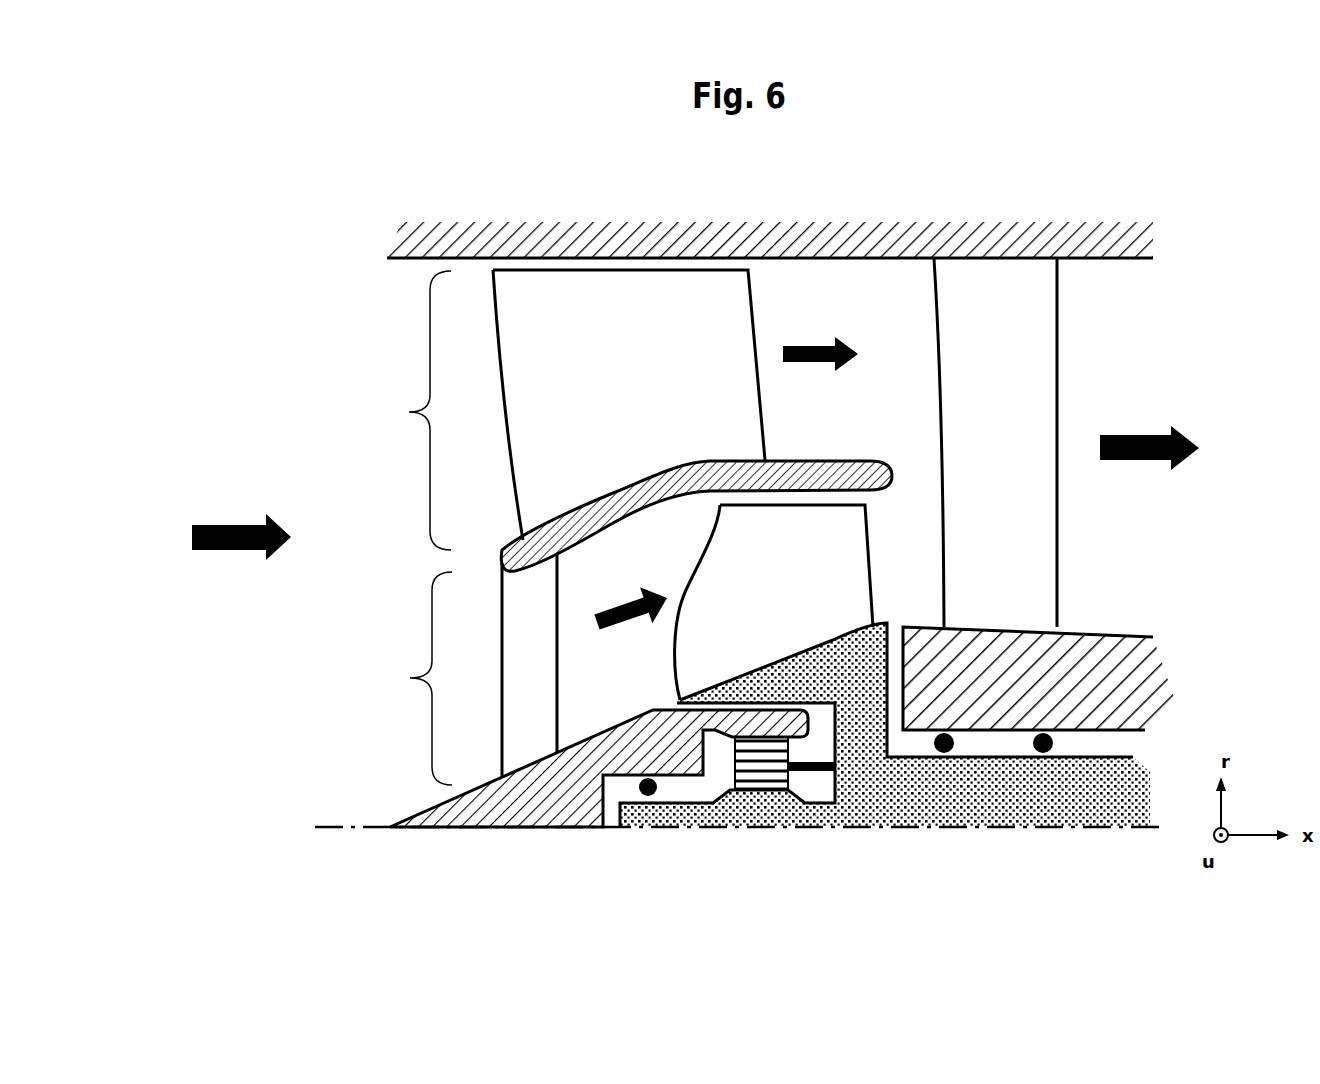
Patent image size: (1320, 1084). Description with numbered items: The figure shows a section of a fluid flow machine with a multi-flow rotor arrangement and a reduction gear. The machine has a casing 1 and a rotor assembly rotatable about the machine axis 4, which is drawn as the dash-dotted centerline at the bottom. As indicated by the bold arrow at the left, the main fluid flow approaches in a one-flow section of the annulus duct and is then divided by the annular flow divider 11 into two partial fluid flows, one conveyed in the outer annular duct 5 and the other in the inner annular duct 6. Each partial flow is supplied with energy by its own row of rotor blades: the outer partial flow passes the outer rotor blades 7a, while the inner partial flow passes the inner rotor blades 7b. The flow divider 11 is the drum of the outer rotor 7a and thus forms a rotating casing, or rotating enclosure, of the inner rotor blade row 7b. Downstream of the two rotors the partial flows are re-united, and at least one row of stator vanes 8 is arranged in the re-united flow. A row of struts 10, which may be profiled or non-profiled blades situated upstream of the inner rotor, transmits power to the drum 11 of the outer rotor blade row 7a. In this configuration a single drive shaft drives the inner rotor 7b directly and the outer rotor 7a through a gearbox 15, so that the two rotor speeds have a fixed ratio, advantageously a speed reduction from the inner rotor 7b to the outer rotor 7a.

The casing 1 is at (532, 237).
The machine axis 4 is at (577, 833).
The outer annular duct 5 is at (393, 410).
The inner annular duct 6 is at (398, 678).
The outer rotor blades 7a is at (708, 293).
The inner rotor blades 7b is at (853, 553).
The stator vanes 8 is at (1020, 340).
The struts 10 is at (532, 687).
The annular flow divider 11 is at (802, 460).
The gearbox 15 is at (765, 768).